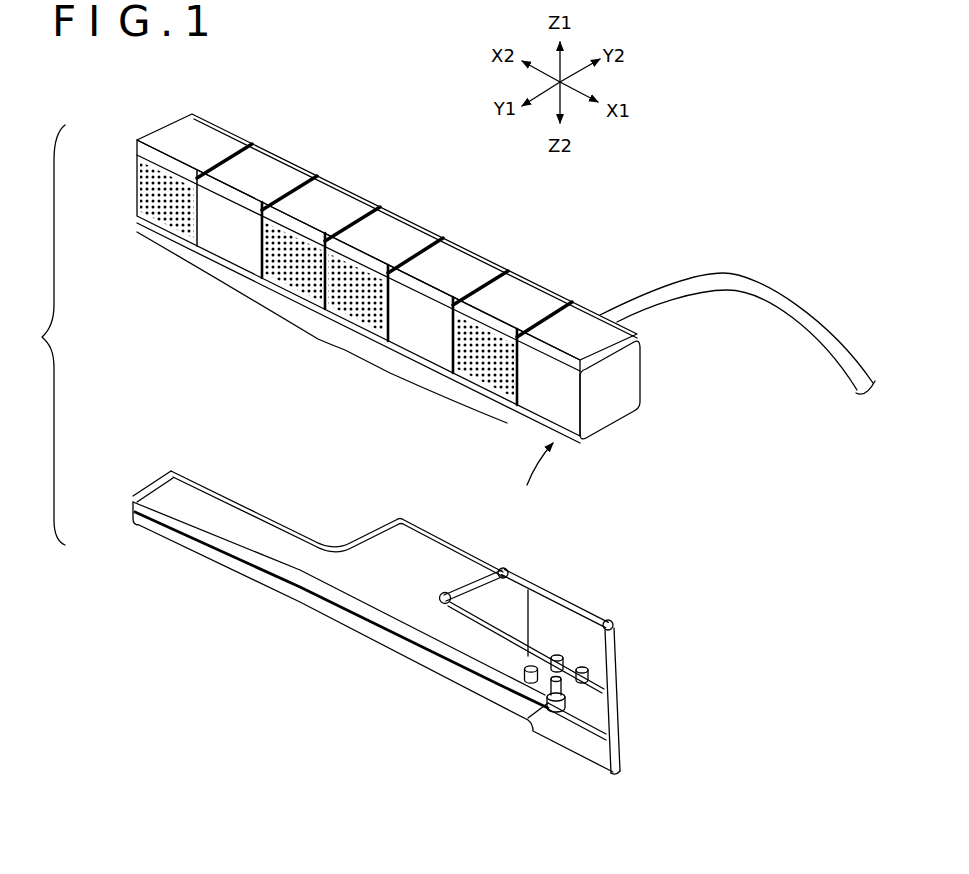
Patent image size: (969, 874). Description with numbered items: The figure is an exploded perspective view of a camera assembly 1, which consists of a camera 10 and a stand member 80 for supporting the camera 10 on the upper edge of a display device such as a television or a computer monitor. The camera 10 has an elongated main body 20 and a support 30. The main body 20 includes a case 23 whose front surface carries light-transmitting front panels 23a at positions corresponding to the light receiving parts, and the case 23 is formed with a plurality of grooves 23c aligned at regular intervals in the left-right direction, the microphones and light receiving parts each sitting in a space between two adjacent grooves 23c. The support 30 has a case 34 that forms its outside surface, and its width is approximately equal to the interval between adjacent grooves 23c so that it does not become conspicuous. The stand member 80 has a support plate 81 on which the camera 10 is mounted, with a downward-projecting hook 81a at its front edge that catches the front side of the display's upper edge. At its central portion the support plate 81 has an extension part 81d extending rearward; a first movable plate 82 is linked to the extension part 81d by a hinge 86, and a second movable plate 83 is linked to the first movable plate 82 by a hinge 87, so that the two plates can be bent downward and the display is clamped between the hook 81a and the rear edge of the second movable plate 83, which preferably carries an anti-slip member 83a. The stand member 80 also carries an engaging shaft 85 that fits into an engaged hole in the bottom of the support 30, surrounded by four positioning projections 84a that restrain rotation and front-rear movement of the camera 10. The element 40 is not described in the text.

The camera assembly 1 is at (44, 335).
The camera 10 is at (467, 293).
The main body 20 is at (322, 327).
The case 23 is at (197, 132).
The front panels 23a is at (233, 215).
The grooves 23c is at (255, 148).
The support 30 is at (525, 475).
The case 34 is at (577, 318).
The cable 40 is at (659, 288).
The stand member 80 is at (375, 623).
The support plate 81 is at (373, 614).
The hook 81a is at (308, 597).
The extension part 81d is at (356, 542).
The first movable plate 82 is at (547, 591).
The second movable plate 83 is at (619, 710).
The anti-slip member 83a is at (621, 768).
The positioning projections 84a is at (586, 672).
The engaging shaft 85 is at (548, 690).
The hinge 86 is at (473, 553).
The hinge 87 is at (614, 626).